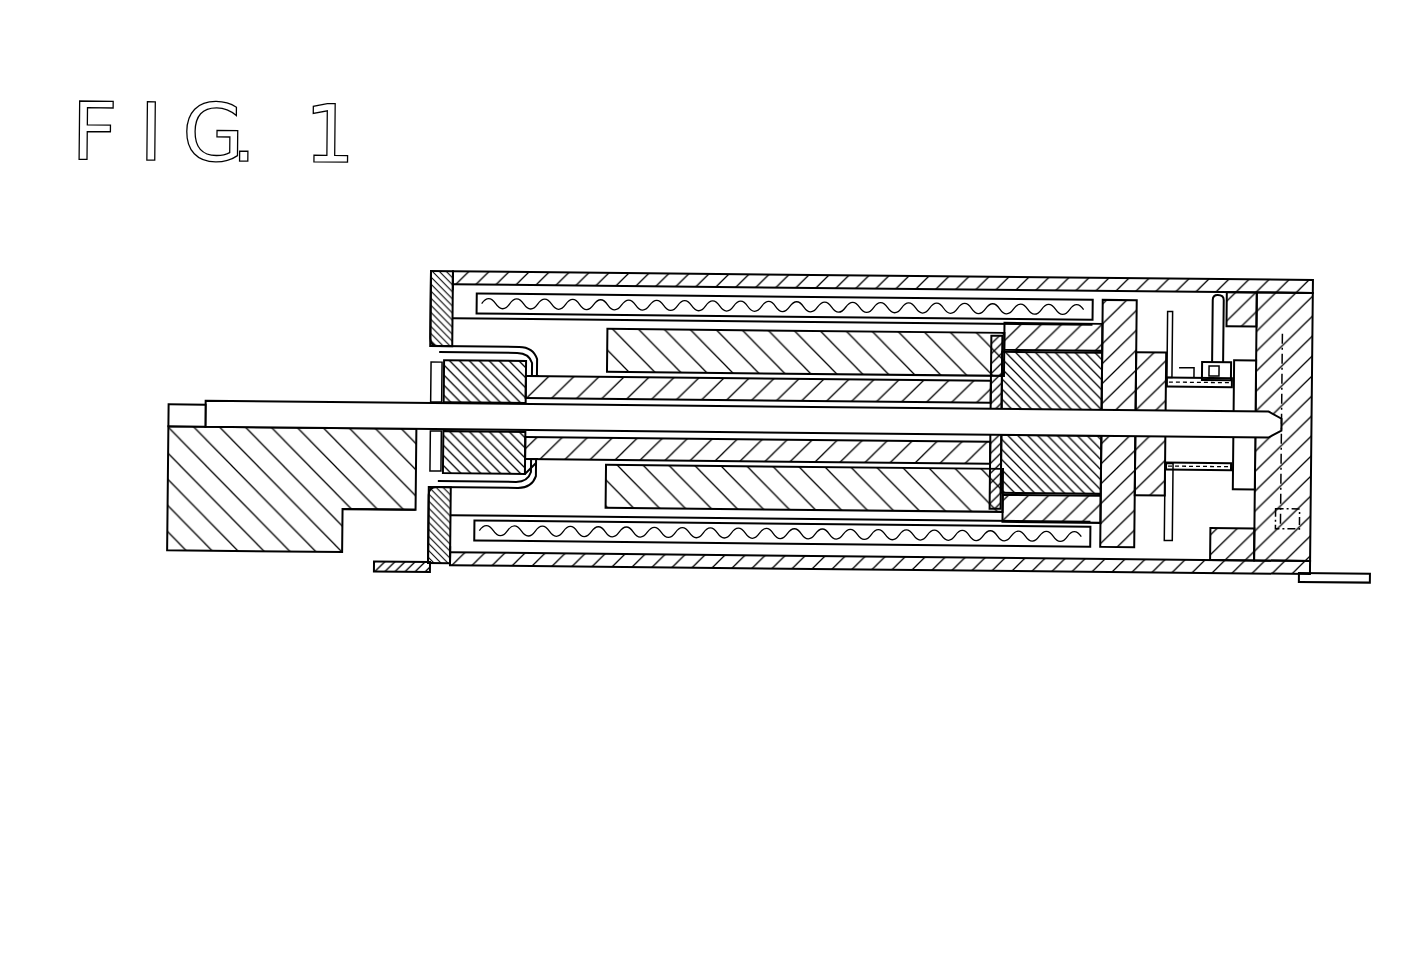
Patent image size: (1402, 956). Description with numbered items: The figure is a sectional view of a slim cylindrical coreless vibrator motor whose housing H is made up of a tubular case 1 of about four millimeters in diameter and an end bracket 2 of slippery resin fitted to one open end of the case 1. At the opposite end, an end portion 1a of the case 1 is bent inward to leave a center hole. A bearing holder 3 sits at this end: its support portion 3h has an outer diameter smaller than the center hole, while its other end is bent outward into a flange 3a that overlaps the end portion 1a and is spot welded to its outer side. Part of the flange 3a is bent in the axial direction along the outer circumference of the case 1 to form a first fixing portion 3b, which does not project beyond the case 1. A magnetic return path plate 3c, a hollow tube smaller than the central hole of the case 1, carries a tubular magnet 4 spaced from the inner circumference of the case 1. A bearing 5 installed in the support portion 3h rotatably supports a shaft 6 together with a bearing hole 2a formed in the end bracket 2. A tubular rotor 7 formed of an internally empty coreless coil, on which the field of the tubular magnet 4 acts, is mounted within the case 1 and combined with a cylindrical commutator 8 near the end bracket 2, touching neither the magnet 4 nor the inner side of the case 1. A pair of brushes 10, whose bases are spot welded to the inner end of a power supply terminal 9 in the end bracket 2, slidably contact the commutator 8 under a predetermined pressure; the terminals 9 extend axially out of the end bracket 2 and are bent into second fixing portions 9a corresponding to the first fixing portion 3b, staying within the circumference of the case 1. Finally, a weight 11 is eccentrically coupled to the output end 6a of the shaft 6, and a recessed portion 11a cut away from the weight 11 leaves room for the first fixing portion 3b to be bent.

The housing H is at (807, 262).
The tubular case 1 is at (631, 270).
The end portion 1a is at (453, 270).
The end bracket 2 is at (1298, 328).
The bearing hole 2a is at (1272, 424).
The bearing holder 3 is at (521, 336).
The flange 3a is at (431, 290).
The first fixing portion 3b is at (443, 575).
The magnetic return path plate 3c is at (557, 384).
The support portion 3h is at (526, 490).
The tubular magnet 4 is at (720, 348).
The bearing 5 is at (431, 378).
The shaft 6 is at (850, 445).
The output end 6a is at (262, 410).
The tubular rotor 7 is at (716, 543).
The cylindrical commutator 8 is at (1193, 367).
The power supply terminal 9 is at (1307, 363).
The second fixing portion 9a is at (1340, 564).
The brushes 10 is at (1217, 357).
The weight 11 is at (232, 540).
The recessed portion 11a is at (372, 520).